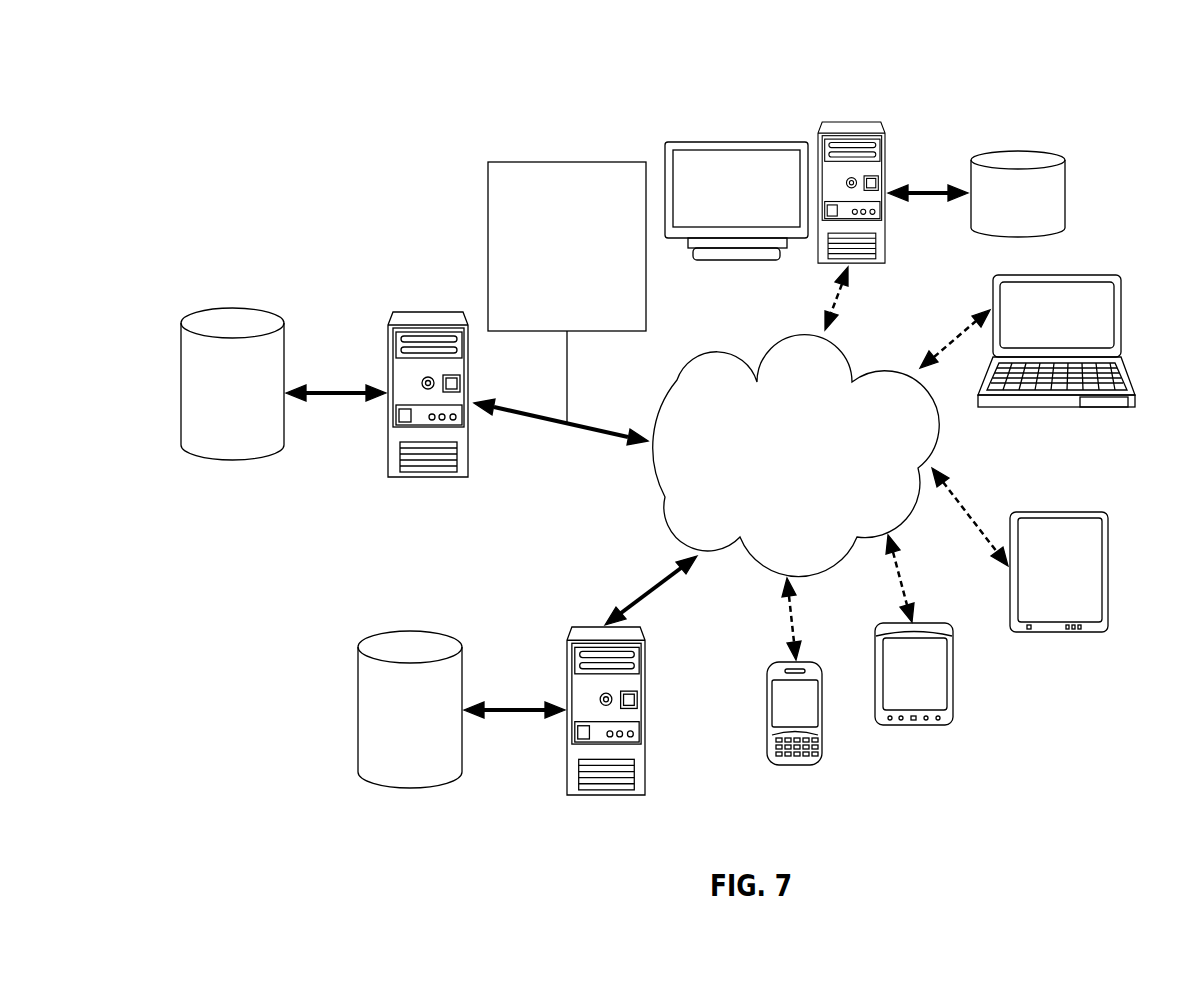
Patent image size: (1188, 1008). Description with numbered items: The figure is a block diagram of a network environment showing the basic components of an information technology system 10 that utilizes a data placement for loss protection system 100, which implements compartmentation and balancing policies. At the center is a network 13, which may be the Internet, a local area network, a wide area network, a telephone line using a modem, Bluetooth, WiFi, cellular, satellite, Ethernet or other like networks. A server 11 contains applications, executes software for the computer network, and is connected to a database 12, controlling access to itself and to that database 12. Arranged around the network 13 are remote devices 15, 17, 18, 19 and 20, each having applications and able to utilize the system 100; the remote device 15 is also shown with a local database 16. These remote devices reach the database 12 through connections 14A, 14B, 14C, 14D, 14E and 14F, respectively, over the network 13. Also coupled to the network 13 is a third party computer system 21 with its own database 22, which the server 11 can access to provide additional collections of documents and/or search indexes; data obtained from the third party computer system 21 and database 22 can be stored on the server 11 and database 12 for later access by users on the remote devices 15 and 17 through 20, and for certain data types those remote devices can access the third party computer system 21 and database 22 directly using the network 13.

The information technology system 10 is at (733, 65).
The server 11 is at (424, 313).
The database 12 is at (238, 307).
The network 13 is at (717, 353).
The connection 14A is at (834, 302).
The connection 14B is at (948, 343).
The connection 14C is at (970, 512).
The connection 14D is at (903, 580).
The connection 14E is at (790, 620).
The connection 14F is at (647, 590).
The remote device 15 is at (848, 122).
The local database 16 is at (1067, 197).
The remote device 17 is at (1122, 316).
The remote device 18 is at (1090, 512).
The remote device 19 is at (955, 690).
The remote device 20 is at (768, 722).
The third party computer system 21 is at (648, 697).
The third party database 22 is at (410, 631).
The data placement for loss protection system 100 is at (553, 317).